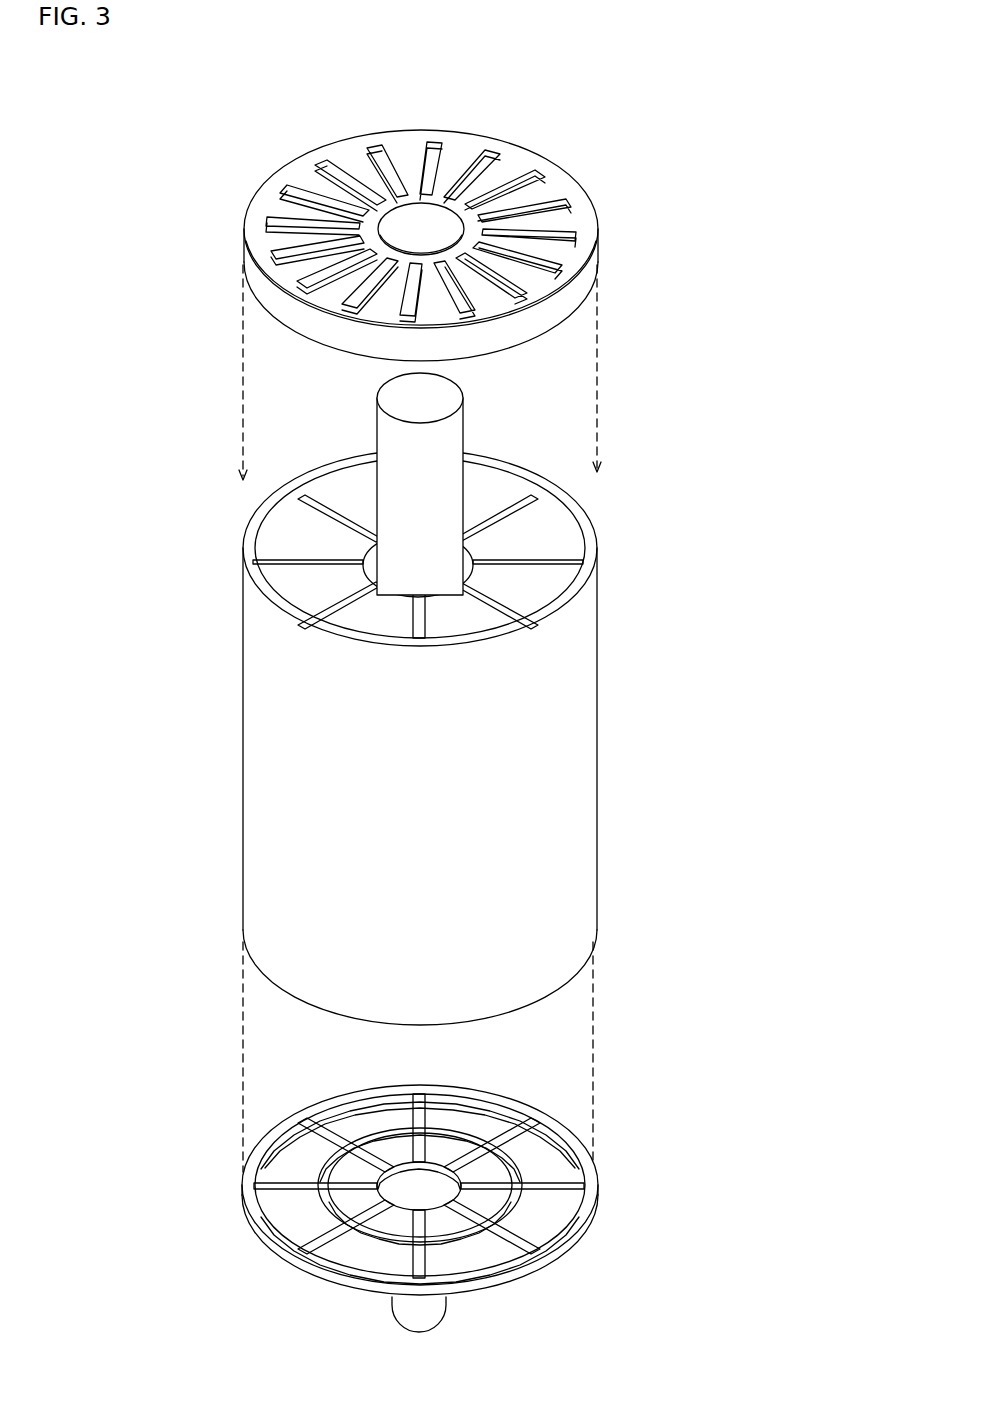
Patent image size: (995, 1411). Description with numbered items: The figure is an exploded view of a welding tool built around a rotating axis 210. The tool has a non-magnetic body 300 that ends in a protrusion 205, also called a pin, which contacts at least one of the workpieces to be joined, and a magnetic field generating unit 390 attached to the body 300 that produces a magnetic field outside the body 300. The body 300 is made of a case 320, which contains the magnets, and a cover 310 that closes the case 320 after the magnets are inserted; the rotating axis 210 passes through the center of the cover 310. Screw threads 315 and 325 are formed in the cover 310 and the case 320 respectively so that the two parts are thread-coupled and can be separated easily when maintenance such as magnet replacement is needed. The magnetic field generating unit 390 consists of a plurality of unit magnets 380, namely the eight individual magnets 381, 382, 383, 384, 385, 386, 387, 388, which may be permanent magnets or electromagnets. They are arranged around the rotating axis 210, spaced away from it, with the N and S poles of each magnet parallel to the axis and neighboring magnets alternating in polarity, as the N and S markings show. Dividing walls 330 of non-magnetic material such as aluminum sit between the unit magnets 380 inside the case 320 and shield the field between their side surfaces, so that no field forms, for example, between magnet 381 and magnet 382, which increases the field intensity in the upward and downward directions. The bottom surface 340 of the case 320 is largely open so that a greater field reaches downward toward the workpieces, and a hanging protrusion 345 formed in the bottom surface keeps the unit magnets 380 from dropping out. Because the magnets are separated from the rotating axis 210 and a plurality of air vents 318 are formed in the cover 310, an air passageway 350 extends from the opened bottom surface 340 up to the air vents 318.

The non-magnetic body 300 is at (712, 333).
The cover 310 is at (477, 223).
The screw thread 315 is at (541, 323).
The air vents 318 is at (434, 143).
The case 320 is at (476, 695).
The screw thread 325 is at (473, 466).
The dividing walls 330 is at (563, 562).
The bottom surface 340 is at (450, 1181).
The hanging protrusion 345 is at (360, 1130).
The air passageway 350 is at (514, 510).
The unit magnets 380 is at (296, 612).
The unit magnet 381 is at (287, 580).
The unit magnet 382 is at (362, 616).
The unit magnet 383 is at (460, 612).
The unit magnet 384 is at (525, 606).
The unit magnet 385 is at (548, 552).
The unit magnet 386 is at (345, 500).
The unit magnet 387 is at (300, 532).
The unit magnet 388 is at (292, 544).
The magnetic field generating unit 390 is at (312, 580).
The rotating axis 210 is at (384, 385).
The protrusion 205 is at (430, 1315).